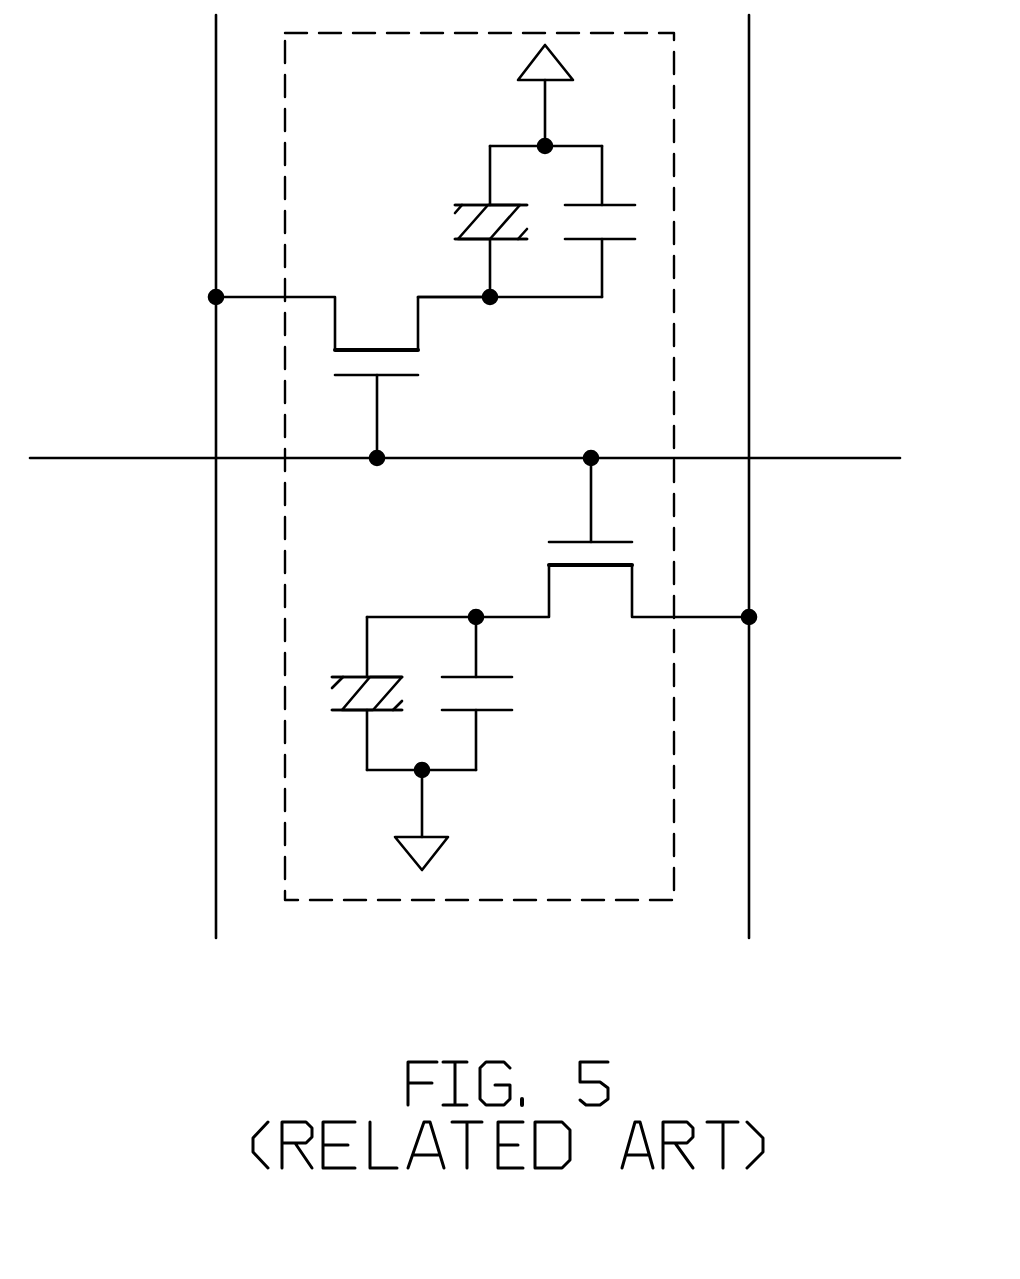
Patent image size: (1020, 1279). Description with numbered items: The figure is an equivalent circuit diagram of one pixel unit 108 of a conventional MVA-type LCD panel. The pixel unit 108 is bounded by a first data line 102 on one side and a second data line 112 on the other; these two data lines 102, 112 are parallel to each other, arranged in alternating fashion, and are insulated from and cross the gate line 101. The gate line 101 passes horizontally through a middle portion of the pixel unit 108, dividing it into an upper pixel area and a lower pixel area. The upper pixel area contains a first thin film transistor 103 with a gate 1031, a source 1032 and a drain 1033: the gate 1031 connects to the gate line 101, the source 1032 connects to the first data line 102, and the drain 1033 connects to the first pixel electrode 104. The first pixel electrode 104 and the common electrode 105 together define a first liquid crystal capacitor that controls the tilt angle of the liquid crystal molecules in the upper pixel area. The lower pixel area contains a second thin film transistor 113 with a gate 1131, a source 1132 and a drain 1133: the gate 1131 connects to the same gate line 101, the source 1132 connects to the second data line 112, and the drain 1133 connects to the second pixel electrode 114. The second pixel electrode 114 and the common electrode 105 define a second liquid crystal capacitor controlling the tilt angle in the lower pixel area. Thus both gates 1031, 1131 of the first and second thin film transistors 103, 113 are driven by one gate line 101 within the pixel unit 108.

The gate line 101 is at (198, 459).
The first data line 102 is at (215, 567).
The second data line 112 is at (808, 372).
The pixel unit 108 is at (667, 973).
The first thin film transistor 103 is at (332, 336).
The gate 1031 is at (188, 399).
The source 1032 is at (335, 325).
The drain 1033 is at (484, 353).
The first pixel electrode 104 is at (466, 242).
The common electrode 105 is at (203, 715).
The second thin film transistor 113 is at (618, 579).
The gate 1131 is at (757, 506).
The source 1132 is at (767, 580).
The drain 1133 is at (470, 557).
The second pixel electrode 114 is at (353, 677).